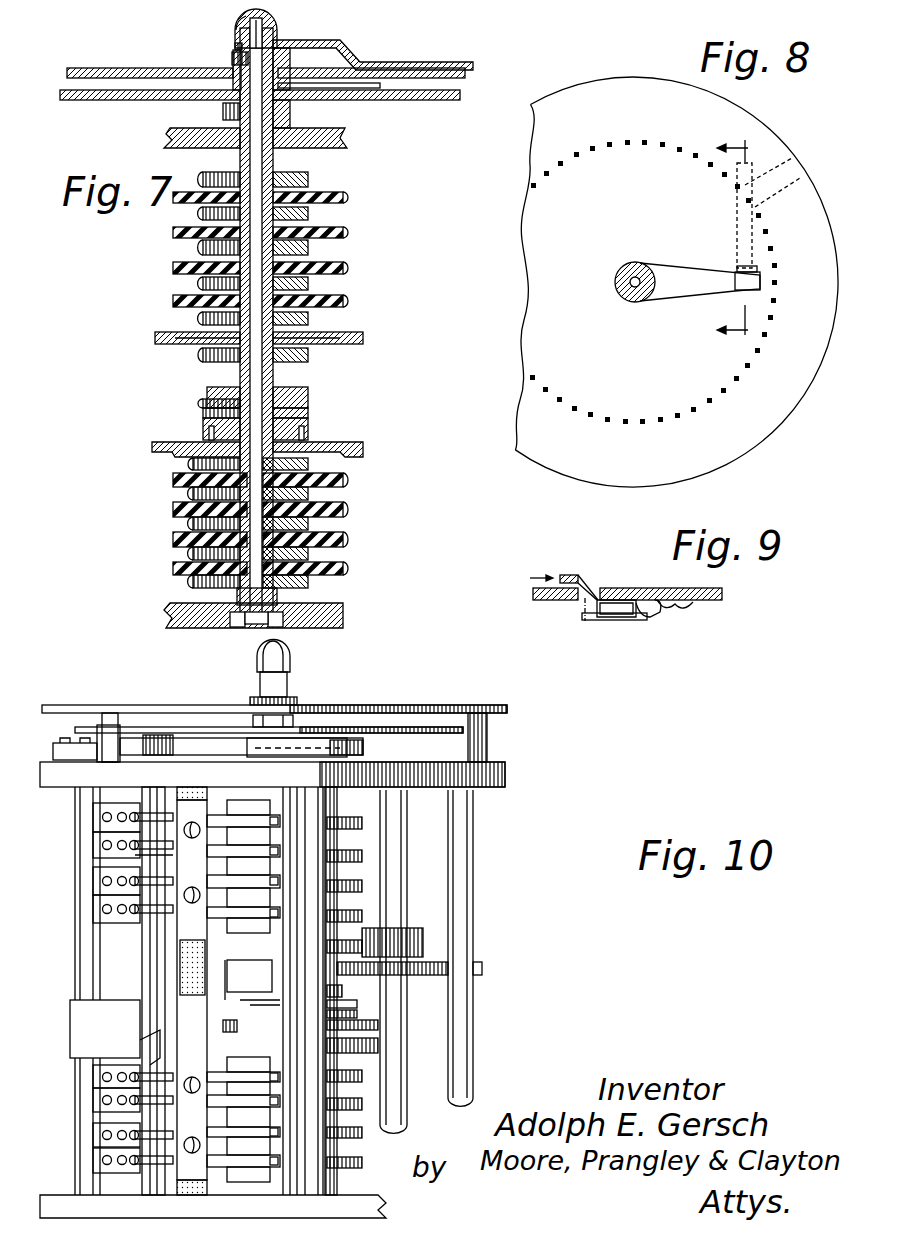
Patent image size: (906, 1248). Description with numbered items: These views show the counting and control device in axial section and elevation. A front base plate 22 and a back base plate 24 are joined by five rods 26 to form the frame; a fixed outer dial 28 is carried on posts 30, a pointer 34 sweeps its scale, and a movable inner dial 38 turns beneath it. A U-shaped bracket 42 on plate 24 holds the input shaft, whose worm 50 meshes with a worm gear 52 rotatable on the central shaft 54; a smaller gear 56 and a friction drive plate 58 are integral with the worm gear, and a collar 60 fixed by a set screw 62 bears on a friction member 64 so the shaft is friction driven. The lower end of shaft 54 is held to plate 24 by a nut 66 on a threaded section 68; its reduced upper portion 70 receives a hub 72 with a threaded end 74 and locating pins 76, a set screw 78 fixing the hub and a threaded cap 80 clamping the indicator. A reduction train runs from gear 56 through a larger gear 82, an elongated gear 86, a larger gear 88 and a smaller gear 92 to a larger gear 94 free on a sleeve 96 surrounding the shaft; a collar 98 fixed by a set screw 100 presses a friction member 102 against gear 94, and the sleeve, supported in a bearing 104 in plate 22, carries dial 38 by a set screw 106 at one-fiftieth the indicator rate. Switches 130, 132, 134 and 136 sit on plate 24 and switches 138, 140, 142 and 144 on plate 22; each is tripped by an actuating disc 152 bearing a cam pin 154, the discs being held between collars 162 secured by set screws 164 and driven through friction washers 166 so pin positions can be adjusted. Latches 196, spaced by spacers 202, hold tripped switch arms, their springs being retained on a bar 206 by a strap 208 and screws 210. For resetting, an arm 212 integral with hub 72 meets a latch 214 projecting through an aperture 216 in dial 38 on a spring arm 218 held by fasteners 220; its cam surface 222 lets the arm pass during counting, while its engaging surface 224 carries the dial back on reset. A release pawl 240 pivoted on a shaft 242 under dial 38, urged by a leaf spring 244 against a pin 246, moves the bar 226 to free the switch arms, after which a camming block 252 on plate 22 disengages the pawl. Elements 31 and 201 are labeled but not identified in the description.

In FIG. 7, the front base plate 22 is at (170, 133).
In FIG. 10, the front base plate 22 is at (505, 773).
In FIG. 7, the back base plate 24 is at (168, 612).
In FIG. 10, the back base plate 24 is at (386, 1207).
In FIG. 10, the rods 26 is at (75, 950).
In FIG. 10, the fixed outer dial 28 is at (448, 705).
In FIG. 10, the posts 30 is at (106, 713).
In FIG. 10, the knob stem 31 is at (292, 686).
In FIG. 7, the pointer 34 is at (346, 43).
In FIG. 7, the movable inner dial 38 is at (437, 100).
In FIG. 8, the movable inner dial 38 is at (536, 455).
In FIG. 9, the movable inner dial 38 is at (700, 590).
In FIG. 10, the movable inner dial 38 is at (180, 727).
In FIG. 10, the U-shaped bracket 42 is at (70, 1022).
In FIG. 10, the worm 50 is at (140, 1055).
In FIG. 7, the worm gear 52 is at (152, 450).
In FIG. 10, the worm gear 52 is at (378, 1043).
In FIG. 7, the central shaft 54 is at (277, 597).
In FIG. 7, the smaller gear 56 is at (209, 433).
In FIG. 10, the smaller gear 56 is at (223, 1025).
In FIG. 7, the friction drive plate 58 is at (308, 411).
In FIG. 10, the friction drive plate 58 is at (357, 1014).
In FIG. 7, the collar 60 is at (308, 392).
In FIG. 10, the collar 60 is at (357, 1004).
In FIG. 7, the set screw 62 is at (203, 401).
In FIG. 7, the friction member 64 is at (203, 411).
In FIG. 7, the nut 66 is at (237, 627).
In FIG. 7, the threaded section 68 is at (275, 627).
In FIG. 7, the reduced portion 70 is at (262, 31).
In FIG. 8, the reduced portion 70 is at (615, 283).
In FIG. 7, the hub 72 is at (232, 58).
In FIG. 7, the threaded upper end 74 is at (236, 28).
In FIG. 7, the locating pins 76 is at (290, 56).
In FIG. 7, the set screw 78 is at (236, 47).
In FIG. 7, the threaded cap 80 is at (279, 16).
In FIG. 10, the threaded cap 80 is at (290, 662).
In FIG. 10, the larger gear 82 is at (378, 1025).
In FIG. 10, the smaller elongated gear 86 is at (340, 996).
In FIG. 10, the larger gear 88 is at (482, 968).
In FIG. 10, the smaller gear 92 is at (423, 942).
In FIG. 7, the larger gear 94 is at (155, 339).
In FIG. 10, the larger gear 94 is at (348, 936).
In FIG. 7, the sleeve 96 is at (308, 316).
In FIG. 7, the collar 98 is at (226, 364).
In FIG. 7, the set screw 100 is at (203, 355).
In FIG. 7, the friction member 102 is at (320, 341).
In FIG. 7, the bearing 104 is at (240, 150).
In FIG. 7, the set screw 106 is at (222, 112).
In FIG. 10, the switch 130 is at (93, 1162).
In FIG. 10, the switch 132 is at (93, 1133).
In FIG. 10, the switch 134 is at (93, 1096).
In FIG. 10, the switch 136 is at (93, 1070).
In FIG. 10, the switch 138 is at (93, 912).
In FIG. 10, the switch 140 is at (93, 888).
In FIG. 10, the switch 142 is at (93, 840).
In FIG. 10, the switch 144 is at (93, 805).
In FIG. 7, the actuating disc 152 is at (173, 268).
In FIG. 10, the actuating disc 152 is at (362, 823).
In FIG. 7, the cam pin 154 is at (350, 302).
In FIG. 7, the collars 162 is at (308, 251).
In FIG. 10, the collars 162 is at (337, 876).
In FIG. 7, the set screws 164 is at (200, 250).
In FIG. 7, the friction washers 166 is at (330, 262).
In FIG. 10, the latch 196 is at (93, 858).
In FIG. 10, the cam bar 201 is at (310, 818).
In FIG. 10, the spacers 202 is at (142, 970).
In FIG. 10, the bar 206 is at (180, 953).
In FIG. 10, the strap 208 is at (207, 800).
In FIG. 10, the screws 210 is at (207, 795).
In FIG. 7, the arm 212 is at (332, 88).
In FIG. 8, the arm 212 is at (668, 295).
In FIG. 9, the arm 212 is at (565, 575).
In FIG. 10, the arm 212 is at (240, 738).
In FIG. 8, the latch 214 is at (745, 290).
In FIG. 9, the latch 214 is at (591, 606).
In FIG. 9, the aperture 216 is at (601, 598).
In FIG. 8, the spring arm 218 is at (787, 205).
In FIG. 9, the spring arm 218 is at (648, 620).
In FIG. 8, the fasteners 220 is at (801, 187).
In FIG. 9, the fasteners 220 is at (680, 612).
In FIG. 9, the cam surface 222 is at (594, 588).
In FIG. 9, the engaging surface 224 is at (581, 603).
In FIG. 10, the bar 226 is at (272, 983).
In FIG. 10, the release pawl 240 is at (200, 735).
In FIG. 10, the shaft 242 is at (150, 735).
In FIG. 10, the leaf spring 244 is at (355, 740).
In FIG. 10, the pin 246 is at (310, 738).
In FIG. 10, the camming block 252 is at (58, 751).